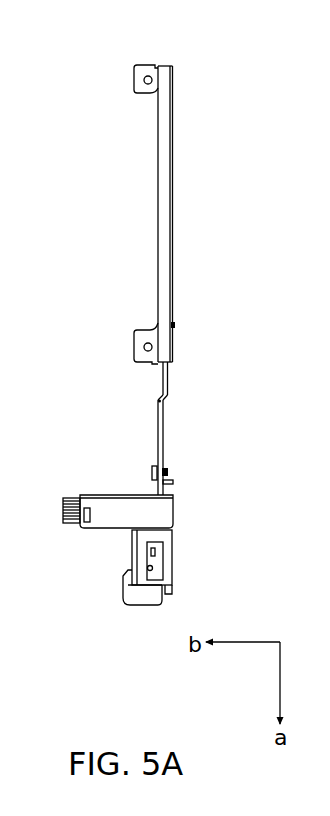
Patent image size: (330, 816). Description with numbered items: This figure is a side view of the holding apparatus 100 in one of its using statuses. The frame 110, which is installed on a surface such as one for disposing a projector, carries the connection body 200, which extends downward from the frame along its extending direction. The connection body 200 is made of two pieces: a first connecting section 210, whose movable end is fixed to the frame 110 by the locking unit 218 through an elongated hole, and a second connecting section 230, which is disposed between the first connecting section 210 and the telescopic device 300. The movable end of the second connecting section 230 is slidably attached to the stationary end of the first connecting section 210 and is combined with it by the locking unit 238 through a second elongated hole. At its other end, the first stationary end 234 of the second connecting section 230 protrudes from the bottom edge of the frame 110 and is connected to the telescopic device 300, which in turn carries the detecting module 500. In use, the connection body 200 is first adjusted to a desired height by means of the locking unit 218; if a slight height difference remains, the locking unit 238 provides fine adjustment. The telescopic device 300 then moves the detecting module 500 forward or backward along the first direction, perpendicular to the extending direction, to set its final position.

The holding apparatus 100 is at (73, 48).
The frame 110 is at (176, 66).
The locking unit 218 is at (178, 327).
The connection body 200 is at (95, 420).
The first connecting section 210 is at (161, 383).
The second connecting section 230 is at (157, 448).
The locking unit 238 is at (172, 471).
The telescopic device 300 is at (168, 512).
The first stationary end 234 is at (98, 493).
The detecting module 500 is at (163, 560).